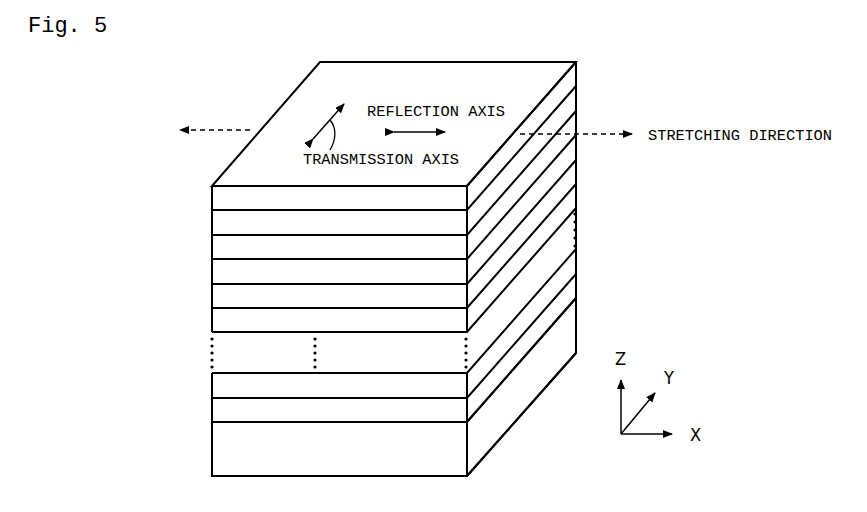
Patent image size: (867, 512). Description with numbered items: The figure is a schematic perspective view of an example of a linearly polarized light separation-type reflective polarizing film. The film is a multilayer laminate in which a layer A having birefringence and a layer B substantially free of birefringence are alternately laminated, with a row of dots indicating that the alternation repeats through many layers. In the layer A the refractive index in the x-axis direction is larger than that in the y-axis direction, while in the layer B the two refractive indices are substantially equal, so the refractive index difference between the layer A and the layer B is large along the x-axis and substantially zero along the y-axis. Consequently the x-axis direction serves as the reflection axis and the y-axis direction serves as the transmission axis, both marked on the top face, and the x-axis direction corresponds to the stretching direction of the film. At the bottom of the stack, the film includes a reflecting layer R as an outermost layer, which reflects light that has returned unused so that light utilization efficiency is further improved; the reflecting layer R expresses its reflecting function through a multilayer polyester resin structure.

The layer A is at (394, 229).
The layer B is at (394, 254).
The reflecting layer R is at (394, 387).